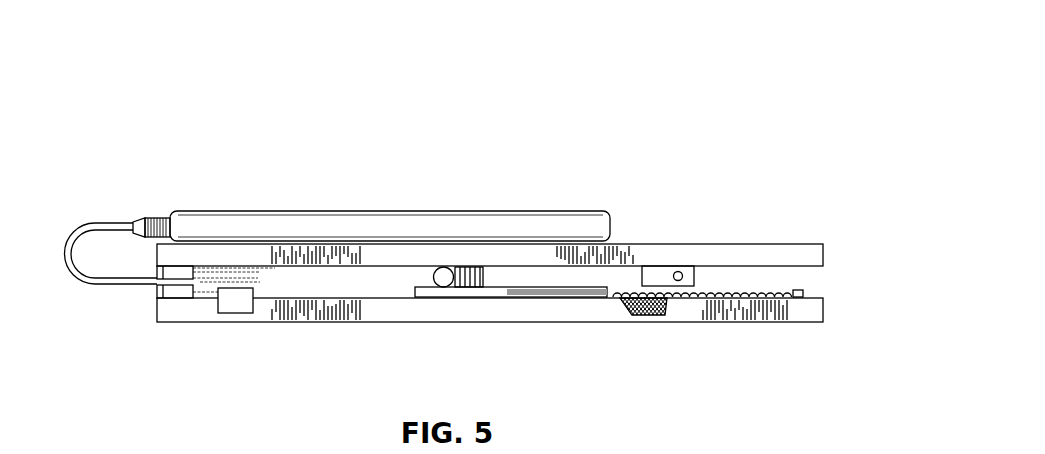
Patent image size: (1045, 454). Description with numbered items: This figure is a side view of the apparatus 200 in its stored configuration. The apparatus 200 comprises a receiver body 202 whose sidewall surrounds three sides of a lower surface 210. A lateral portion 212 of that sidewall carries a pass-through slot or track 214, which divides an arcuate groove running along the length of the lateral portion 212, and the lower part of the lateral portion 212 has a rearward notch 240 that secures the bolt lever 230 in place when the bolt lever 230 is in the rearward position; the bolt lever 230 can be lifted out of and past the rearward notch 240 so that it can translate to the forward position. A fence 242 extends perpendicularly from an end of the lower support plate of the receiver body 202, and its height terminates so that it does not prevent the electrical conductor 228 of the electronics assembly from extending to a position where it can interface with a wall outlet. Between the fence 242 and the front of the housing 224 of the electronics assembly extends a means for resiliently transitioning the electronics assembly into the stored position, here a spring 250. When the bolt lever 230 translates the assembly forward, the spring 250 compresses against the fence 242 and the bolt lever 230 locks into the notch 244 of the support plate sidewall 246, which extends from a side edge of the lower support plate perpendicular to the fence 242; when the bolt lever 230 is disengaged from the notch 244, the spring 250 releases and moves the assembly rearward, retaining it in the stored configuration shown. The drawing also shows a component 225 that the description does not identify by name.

The apparatus 200 is at (658, 80).
The receiver body 202 is at (152, 312).
The lower surface 210 is at (188, 318).
The lateral portion 212 is at (152, 250).
The pass-through slot 214 is at (152, 290).
The housing 224 is at (373, 280).
The bearing plate 225 is at (428, 290).
The electrical conductor 228 is at (660, 275).
The bolt lever 230 is at (243, 302).
The rearward notch 240 is at (235, 296).
The fence 242 is at (803, 290).
The notch 244 is at (643, 315).
The support plate sidewall 246 is at (765, 323).
The spring 250 is at (662, 313).